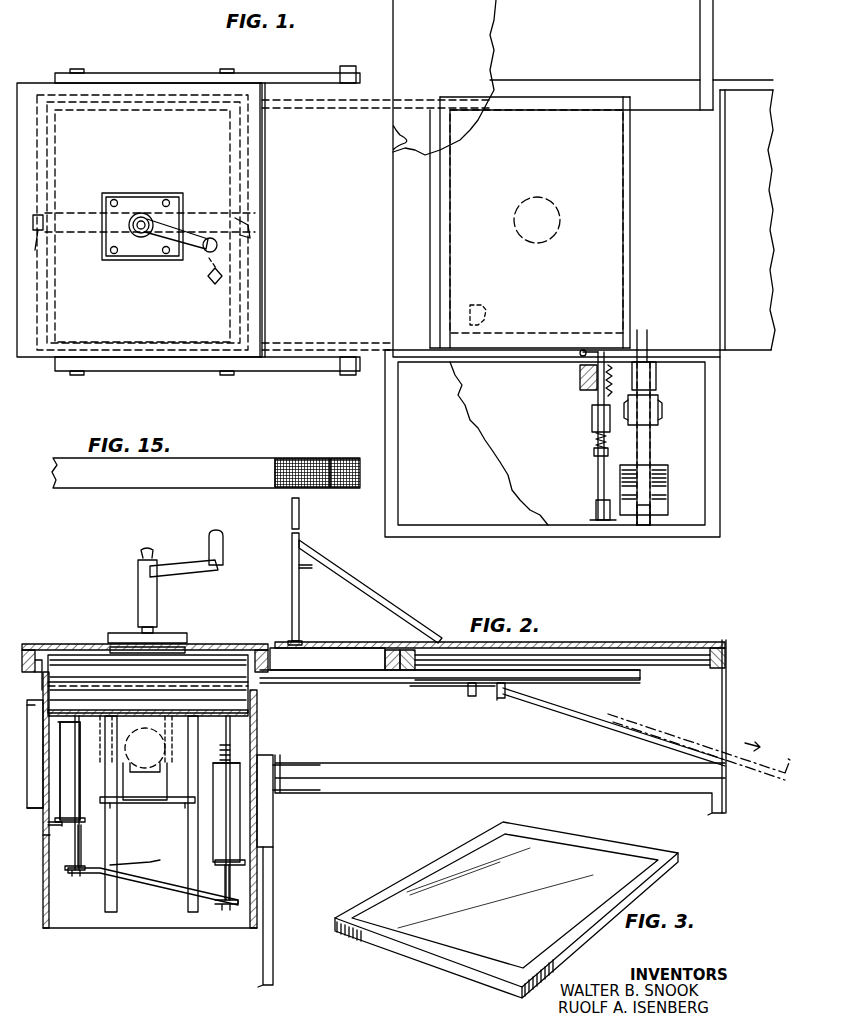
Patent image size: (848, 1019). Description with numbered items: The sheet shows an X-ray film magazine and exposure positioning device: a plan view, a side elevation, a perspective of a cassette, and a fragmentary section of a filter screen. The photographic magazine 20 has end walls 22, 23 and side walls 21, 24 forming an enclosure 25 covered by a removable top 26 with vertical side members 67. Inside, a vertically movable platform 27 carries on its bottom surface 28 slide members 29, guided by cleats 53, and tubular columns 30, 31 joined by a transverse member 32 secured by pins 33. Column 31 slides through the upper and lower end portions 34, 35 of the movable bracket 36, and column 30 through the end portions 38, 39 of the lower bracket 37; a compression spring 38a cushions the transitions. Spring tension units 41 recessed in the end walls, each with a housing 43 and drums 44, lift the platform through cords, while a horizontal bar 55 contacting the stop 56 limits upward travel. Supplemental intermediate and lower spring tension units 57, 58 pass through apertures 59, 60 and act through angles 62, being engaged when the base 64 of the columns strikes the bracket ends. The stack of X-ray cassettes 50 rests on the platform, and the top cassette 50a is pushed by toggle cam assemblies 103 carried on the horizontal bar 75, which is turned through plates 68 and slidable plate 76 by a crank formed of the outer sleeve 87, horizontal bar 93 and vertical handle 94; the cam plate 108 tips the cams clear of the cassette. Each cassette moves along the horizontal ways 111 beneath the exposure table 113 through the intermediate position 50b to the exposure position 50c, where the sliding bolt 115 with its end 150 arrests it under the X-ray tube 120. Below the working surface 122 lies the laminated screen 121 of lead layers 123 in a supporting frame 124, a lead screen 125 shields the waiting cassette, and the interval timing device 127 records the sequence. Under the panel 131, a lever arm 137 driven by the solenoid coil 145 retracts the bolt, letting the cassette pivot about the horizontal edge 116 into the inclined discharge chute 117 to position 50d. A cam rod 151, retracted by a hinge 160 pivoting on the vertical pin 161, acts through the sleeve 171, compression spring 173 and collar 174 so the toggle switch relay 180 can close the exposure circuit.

In FIG. 2, the photographic magazine 20 is at (90, 949).
In FIG. 1, the side wall 21 is at (44, 340).
In FIG. 2, the side wall 21 is at (46, 898).
In FIG. 1, the end wall 22 is at (118, 95).
In FIG. 2, the end wall 22 is at (155, 920).
In FIG. 1, the end wall 23 is at (152, 360).
In FIG. 1, the side wall 24 is at (240, 128).
In FIG. 2, the side wall 24 is at (258, 896).
In FIG. 2, the enclosure 25 is at (158, 846).
In FIG. 1, the removable top 26 is at (210, 340).
In FIG. 2, the removable top 26 is at (62, 646).
In FIG. 2, the rectangular platform 27 is at (42, 700).
In FIG. 2, the bottom surface 28 is at (250, 715).
In FIG. 2, the slide members 29 is at (115, 775).
In FIG. 2, the column 30 is at (230, 880).
In FIG. 2, the column 31 is at (80, 850).
In FIG. 2, the transverse member 32 is at (162, 890).
In FIG. 2, the pins 33 is at (73, 876).
In FIG. 2, the upper end portion 34 is at (85, 735).
In FIG. 2, the lower end portion 35 is at (85, 820).
In FIG. 2, the movable bracket 36 is at (68, 770).
In FIG. 2, the lower bracket 37 is at (240, 808).
In FIG. 2, the end portion 38 is at (220, 765).
In FIG. 2, the compression spring 38a is at (300, 752).
In FIG. 2, the end portion 39 is at (222, 850).
In FIG. 2, the spring tension units 41 is at (195, 690).
In FIG. 2, the housing 43 is at (220, 752).
In FIG. 2, the drum 44 is at (160, 690).
In FIG. 2, the X-ray cassette 50 is at (250, 696).
In FIG. 3, the X-ray cassette 50 is at (678, 856).
In FIG. 2, the top cassette position 50a is at (68, 670).
In FIG. 1, the intermediate cassette position 50b is at (390, 262).
In FIG. 2, the intermediate cassette position 50b is at (315, 670).
In FIG. 1, the exposure position 50c is at (612, 215).
In FIG. 2, the exposure position 50c is at (570, 675).
In FIG. 2, the discharge position 50d is at (690, 728).
In FIG. 2, the strips or cleats 53 is at (144, 863).
In FIG. 2, the horizontal bar 55 is at (146, 803).
In FIG. 2, the stop 56 is at (145, 781).
In FIG. 2, the intermediate spring tension unit 57 is at (42, 812).
In FIG. 2, the lower spring tension unit 58 is at (273, 820).
In FIG. 2, the aperture 59 is at (43, 840).
In FIG. 2, the aperture 60 is at (270, 852).
In FIG. 2, the angles 62 is at (290, 882).
In FIG. 2, the base 64 is at (92, 700).
In FIG. 2, the vertical side members 67 is at (28, 660).
In FIG. 1, the plates 68 is at (185, 200).
In FIG. 2, the plates 68 is at (168, 633).
In FIG. 1, the horizontal bar 75 is at (68, 215).
In FIG. 2, the horizontal bar 75 is at (225, 680).
In FIG. 1, the slidable plate 76 is at (158, 200).
In FIG. 1, the outer sleeve 87 is at (142, 215).
In FIG. 2, the outer sleeve 87 is at (138, 584).
In FIG. 1, the horizontal bar 93 is at (162, 240).
In FIG. 2, the horizontal bar 93 is at (178, 566).
In FIG. 1, the vertical handle 94 is at (205, 251).
In FIG. 2, the vertical handle 94 is at (222, 545).
In FIG. 1, the toggle cam assembly 103 is at (43, 255).
In FIG. 1, the cam plate 108 is at (214, 284).
In FIG. 2, the cam plate 108 is at (275, 660).
In FIG. 2, the horizontal ways 111 is at (410, 695).
In FIG. 1, the exposure table 113 is at (685, 167).
In FIG. 2, the exposure table 113 is at (735, 640).
In FIG. 1, the sliding bolt 115 is at (665, 435).
In FIG. 2, the horizontal edge 116 is at (503, 700).
In FIG. 2, the inclined discharge chute 117 is at (582, 708).
In FIG. 1, the X-ray tube 120 is at (553, 238).
In FIG. 15, the laminated screen 121 is at (247, 455).
In FIG. 2, the laminated screen 121 is at (640, 655).
In FIG. 1, the working surface 122 is at (481, 62).
In FIG. 2, the working surface 122 is at (698, 640).
In FIG. 15, the lead layers 123 is at (302, 458).
In FIG. 15, the supporting frame 124 is at (355, 485).
In FIG. 2, the lead screen 125 is at (365, 590).
In FIG. 1, the interval timing device 127 is at (482, 308).
In FIG. 1, the panel 131 is at (482, 428).
In FIG. 1, the lever arm 137 is at (658, 410).
In FIG. 1, the coil 145 is at (672, 482).
In FIG. 1, the bolt end 150 is at (645, 332).
In FIG. 1, the cam rod 151 is at (598, 478).
In FIG. 1, the hinge 160 is at (578, 372).
In FIG. 1, the vertical pin 161 is at (585, 345).
In FIG. 1, the sleeve 171 is at (595, 430).
In FIG. 1, the compression spring 173 is at (590, 455).
In FIG. 1, the collar 174 is at (608, 442).
In FIG. 1, the toggle switch relay 180 is at (590, 388).